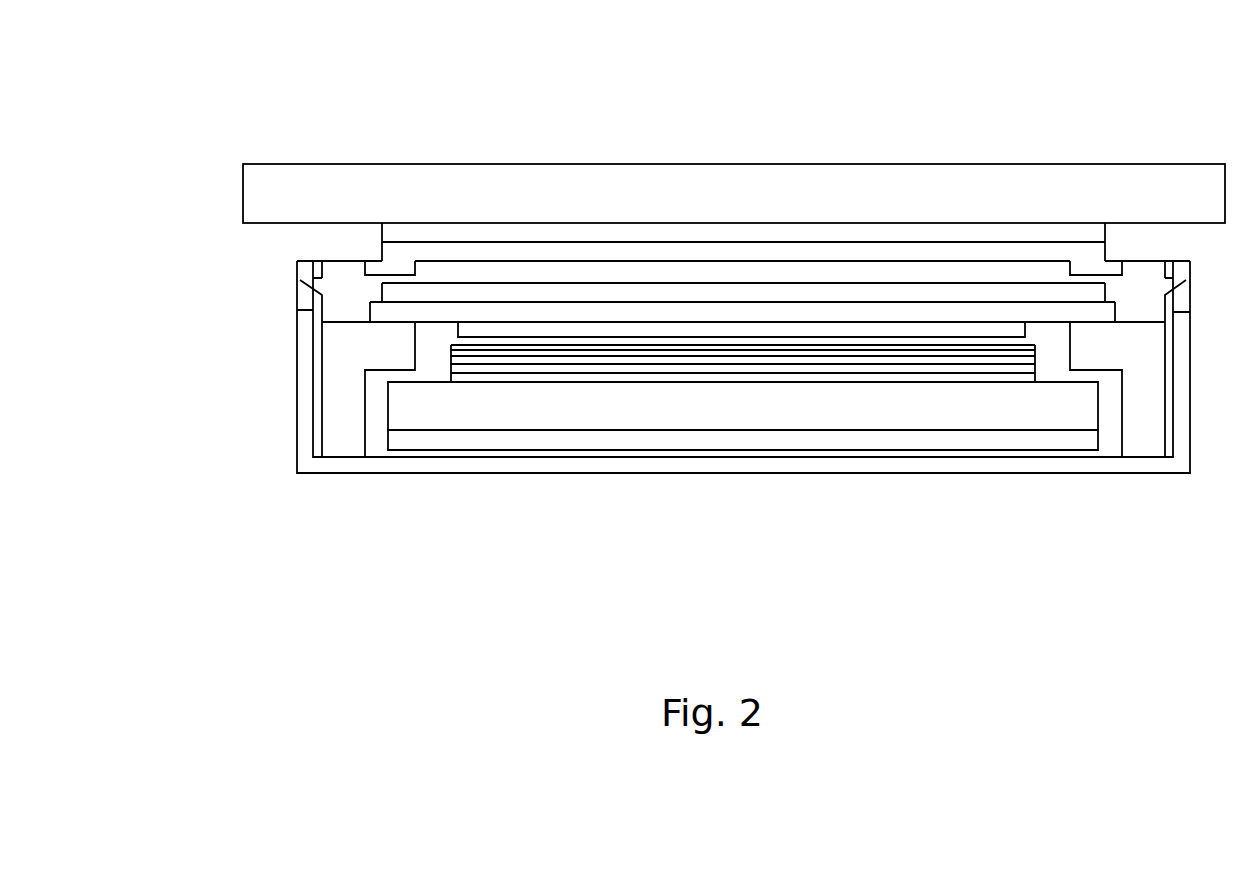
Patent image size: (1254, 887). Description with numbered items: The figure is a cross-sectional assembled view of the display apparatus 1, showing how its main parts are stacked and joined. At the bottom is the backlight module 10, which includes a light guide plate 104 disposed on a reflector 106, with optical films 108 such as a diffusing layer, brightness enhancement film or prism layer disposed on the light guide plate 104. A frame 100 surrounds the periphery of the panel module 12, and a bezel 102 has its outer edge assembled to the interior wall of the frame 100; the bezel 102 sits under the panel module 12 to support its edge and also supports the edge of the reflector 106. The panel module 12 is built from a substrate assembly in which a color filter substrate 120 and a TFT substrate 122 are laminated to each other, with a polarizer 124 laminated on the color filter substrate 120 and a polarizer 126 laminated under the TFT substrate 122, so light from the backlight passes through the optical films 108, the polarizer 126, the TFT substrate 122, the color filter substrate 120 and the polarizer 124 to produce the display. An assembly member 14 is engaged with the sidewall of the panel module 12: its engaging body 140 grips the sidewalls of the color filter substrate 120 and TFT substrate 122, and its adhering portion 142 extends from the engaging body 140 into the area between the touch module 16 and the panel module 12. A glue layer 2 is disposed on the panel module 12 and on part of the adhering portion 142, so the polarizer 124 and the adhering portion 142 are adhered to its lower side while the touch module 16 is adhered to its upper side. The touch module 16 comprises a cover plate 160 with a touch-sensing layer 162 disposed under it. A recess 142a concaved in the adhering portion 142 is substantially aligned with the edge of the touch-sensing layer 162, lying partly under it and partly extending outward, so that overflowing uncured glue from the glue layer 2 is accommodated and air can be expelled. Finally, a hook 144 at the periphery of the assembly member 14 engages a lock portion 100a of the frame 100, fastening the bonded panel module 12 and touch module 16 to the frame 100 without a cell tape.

The display apparatus 1 is at (222, 118).
The glue layer 2 is at (528, 247).
The backlight module 10 is at (535, 510).
The panel module 12 is at (583, 533).
The assembly member 14 is at (150, 215).
The touch module 16 is at (1085, 94).
The frame 100 is at (303, 438).
The lock portion 100a is at (300, 302).
The bezel 102 is at (338, 437).
The light guide plate 104 is at (1052, 408).
The reflector 106 is at (965, 445).
The optical films 108 is at (447, 360).
The color filter substrate 120 is at (842, 293).
The TFT substrate 122 is at (757, 312).
The polarizer 124 is at (672, 275).
The polarizer 126 is at (578, 330).
The engaging body 140 is at (310, 268).
The adhering portion 142 is at (427, 268).
The recess 142a is at (374, 275).
The hook 144 is at (297, 303).
The cover plate 160 is at (905, 182).
The touch-sensing layer 162 is at (1012, 232).